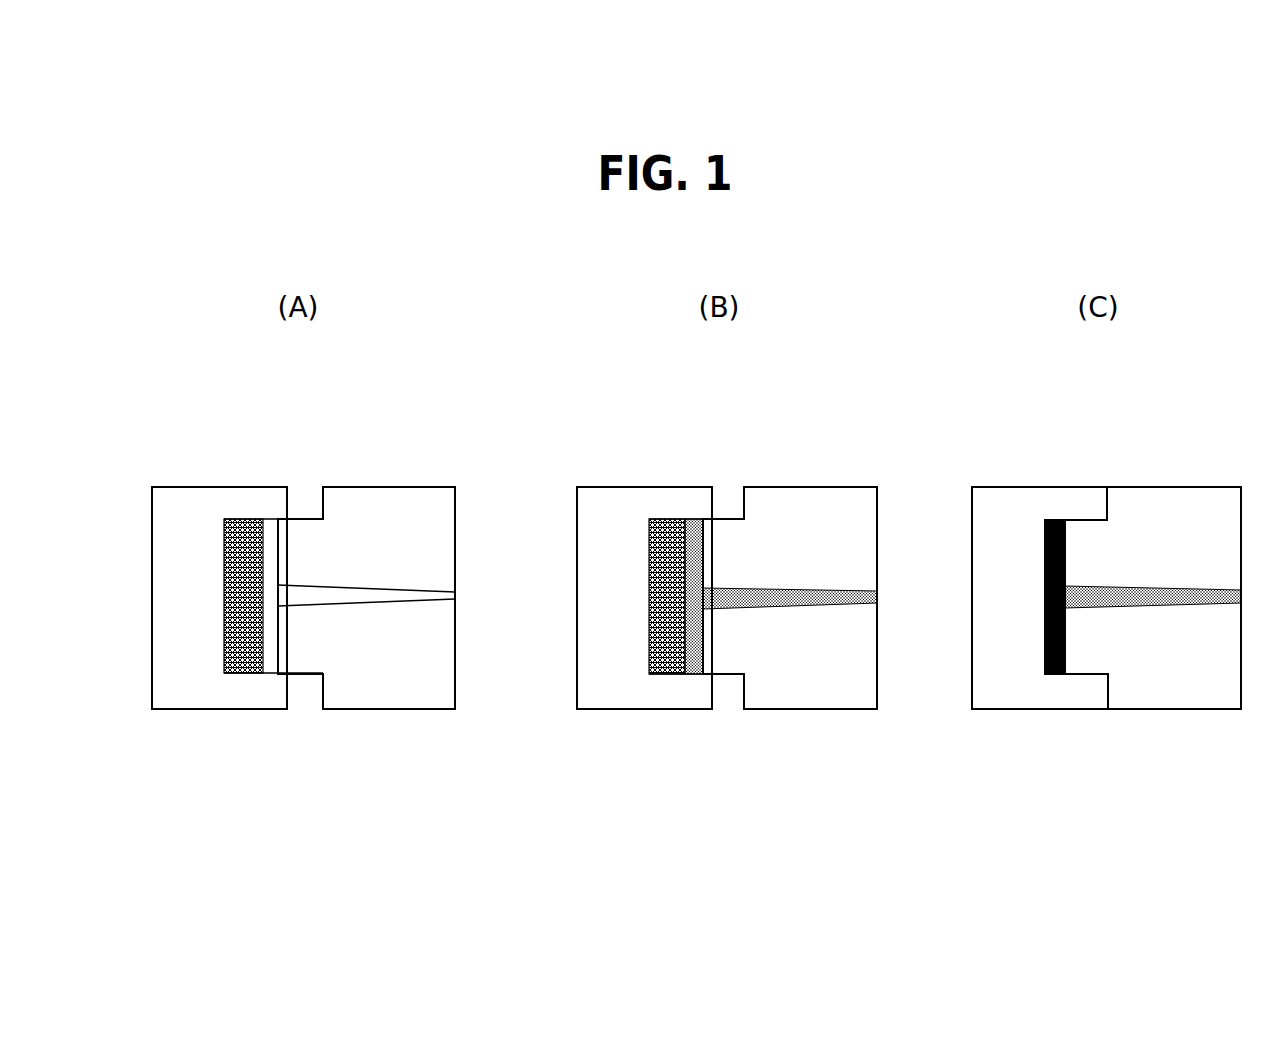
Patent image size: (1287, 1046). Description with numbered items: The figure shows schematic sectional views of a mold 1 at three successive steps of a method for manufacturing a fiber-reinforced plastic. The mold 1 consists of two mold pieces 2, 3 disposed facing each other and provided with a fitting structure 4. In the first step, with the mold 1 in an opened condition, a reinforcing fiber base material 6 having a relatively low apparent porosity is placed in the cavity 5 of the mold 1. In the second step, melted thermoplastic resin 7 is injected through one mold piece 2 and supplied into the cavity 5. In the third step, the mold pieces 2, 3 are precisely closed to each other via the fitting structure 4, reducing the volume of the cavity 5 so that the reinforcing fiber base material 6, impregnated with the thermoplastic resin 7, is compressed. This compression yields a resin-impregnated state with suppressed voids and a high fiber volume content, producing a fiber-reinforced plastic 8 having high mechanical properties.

The mold 1 is at (205, 406).
The mold piece 2 is at (393, 498).
The mold piece 3 is at (218, 498).
The fitting structure 4 is at (310, 676).
The cavity 5 is at (270, 657).
The reinforcing fiber base material 6 is at (223, 578).
The thermoplastic resin 7 is at (698, 675).
The fiber-reinforced plastic 8 is at (1045, 588).